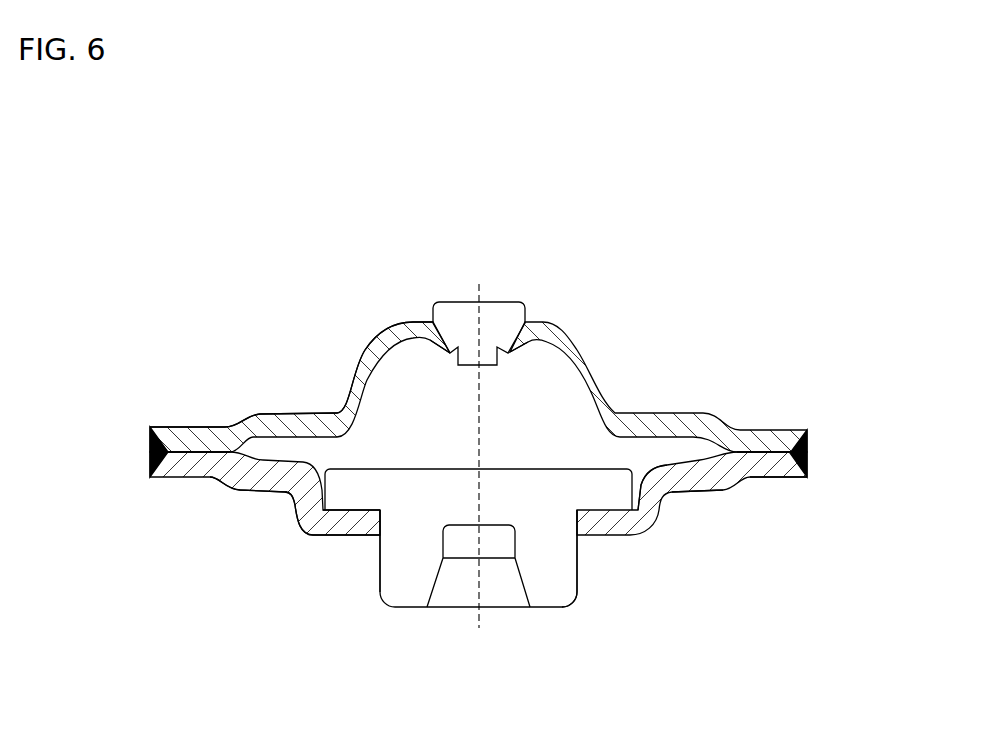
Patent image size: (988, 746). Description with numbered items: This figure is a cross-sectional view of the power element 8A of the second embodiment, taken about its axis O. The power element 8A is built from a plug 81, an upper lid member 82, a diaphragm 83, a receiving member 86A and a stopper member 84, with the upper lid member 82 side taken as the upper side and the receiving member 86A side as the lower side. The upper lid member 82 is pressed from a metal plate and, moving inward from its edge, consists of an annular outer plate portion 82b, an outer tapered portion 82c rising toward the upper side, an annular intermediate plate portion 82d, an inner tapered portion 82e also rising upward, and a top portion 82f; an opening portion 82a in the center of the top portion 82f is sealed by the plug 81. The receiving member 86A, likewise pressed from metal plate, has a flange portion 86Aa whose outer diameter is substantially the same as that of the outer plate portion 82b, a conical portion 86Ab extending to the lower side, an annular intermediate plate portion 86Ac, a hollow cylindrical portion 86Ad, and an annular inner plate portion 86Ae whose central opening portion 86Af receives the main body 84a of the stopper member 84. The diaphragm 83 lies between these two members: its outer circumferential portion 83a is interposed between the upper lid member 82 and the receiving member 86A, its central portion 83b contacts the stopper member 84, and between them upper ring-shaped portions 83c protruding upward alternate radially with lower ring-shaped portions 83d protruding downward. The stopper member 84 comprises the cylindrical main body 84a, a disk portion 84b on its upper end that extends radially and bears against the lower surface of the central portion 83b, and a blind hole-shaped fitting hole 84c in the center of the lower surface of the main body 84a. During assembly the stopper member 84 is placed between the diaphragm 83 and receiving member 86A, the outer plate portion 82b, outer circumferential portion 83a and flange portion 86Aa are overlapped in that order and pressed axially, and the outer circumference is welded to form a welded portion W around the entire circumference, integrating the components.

The power element 8A is at (667, 277).
The plug 81 is at (497, 320).
The upper lid member 82 is at (148, 427).
The opening portion 82a is at (457, 350).
The outer plate portion 82b is at (183, 430).
The outer tapered portion 82c is at (230, 425).
The intermediate plate portion 82d is at (297, 413).
The inner tapered portion 82e is at (350, 345).
The top portion 82f is at (418, 322).
The diaphragm 83 is at (640, 463).
The outer circumferential portion 83a is at (767, 430).
The central portion 83b is at (535, 466).
The upper ring-shaped portion 83c is at (658, 485).
The lower ring-shaped portion 83d is at (705, 492).
The stopper member 84 is at (578, 578).
The main body 84a is at (565, 593).
The disk portion 84b is at (614, 492).
The fitting hole 84c is at (487, 527).
The receiving member 86A is at (810, 480).
The flange portion 86Aa is at (170, 480).
The conical portion 86Ab is at (218, 483).
The intermediate plate portion 86Ac is at (253, 490).
The hollow cylindrical portion 86Ad is at (297, 517).
The inner plate portion 86Ae is at (333, 533).
The central opening portion 86Af is at (387, 523).
The axis O is at (481, 440).
The welded portion W is at (812, 452).